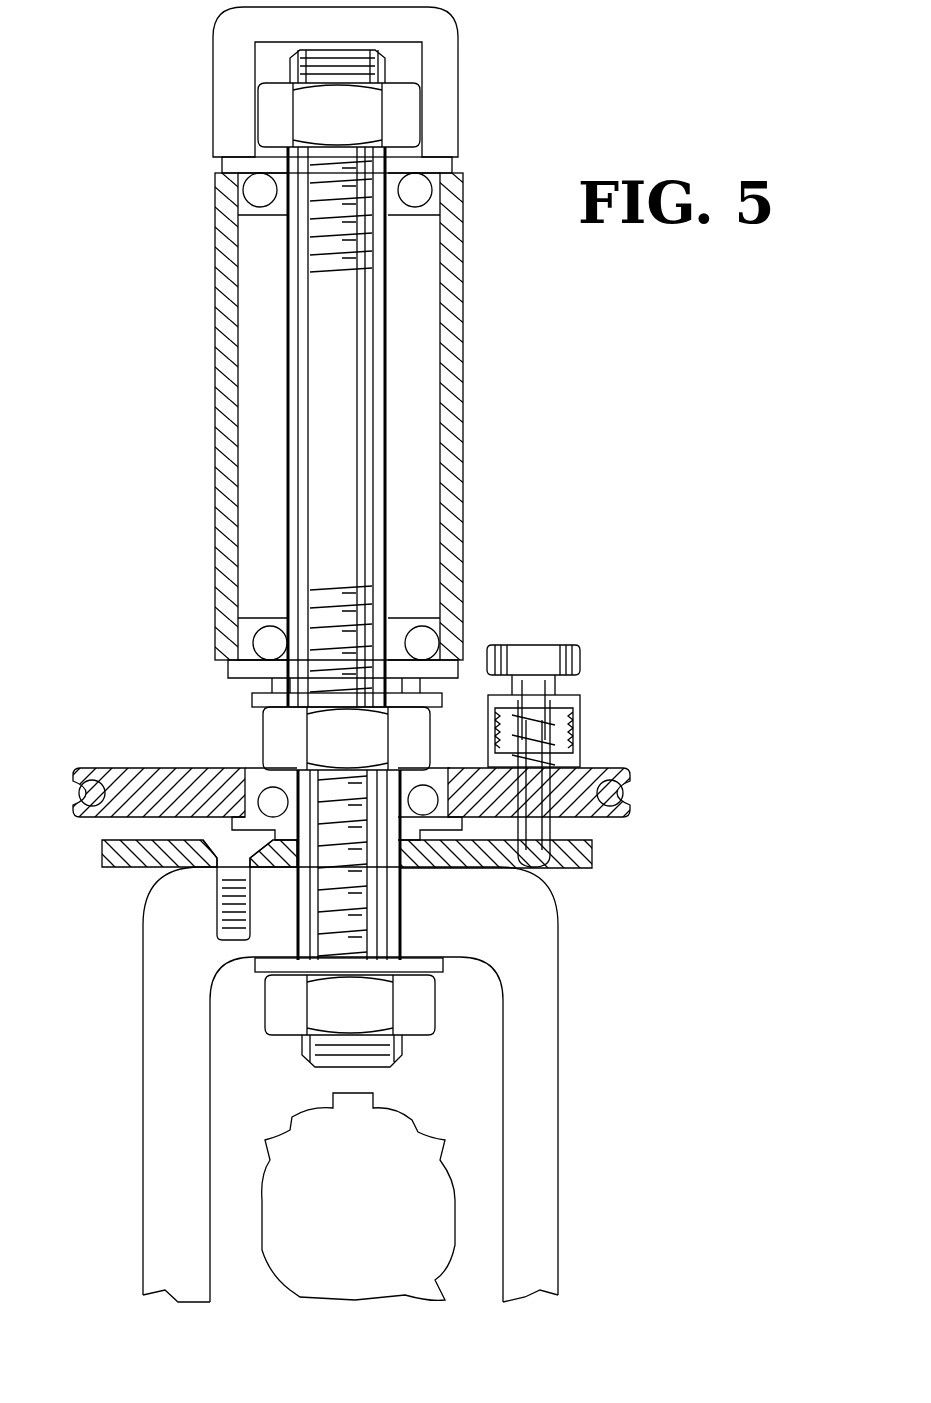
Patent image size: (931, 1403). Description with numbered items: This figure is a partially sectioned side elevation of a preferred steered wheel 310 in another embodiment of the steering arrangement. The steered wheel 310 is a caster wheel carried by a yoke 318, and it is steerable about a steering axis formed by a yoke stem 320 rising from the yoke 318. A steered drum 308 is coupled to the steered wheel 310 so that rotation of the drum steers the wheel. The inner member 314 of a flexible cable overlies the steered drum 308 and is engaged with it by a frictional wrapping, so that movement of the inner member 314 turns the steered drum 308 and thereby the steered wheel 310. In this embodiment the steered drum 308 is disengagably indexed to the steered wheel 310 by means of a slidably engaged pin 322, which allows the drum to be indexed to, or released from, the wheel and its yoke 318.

The yoke stem 320 is at (352, 397).
The slidably engaged pin 322 is at (527, 657).
The steered drum 308 is at (583, 765).
The inner member 314 is at (625, 793).
The yoke 318 is at (528, 947).
The steered wheel 310 is at (388, 1217).